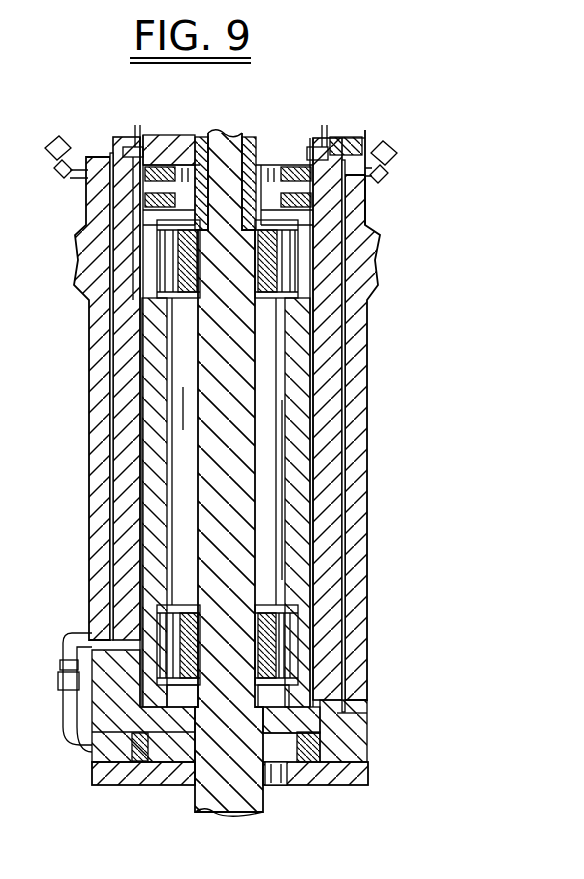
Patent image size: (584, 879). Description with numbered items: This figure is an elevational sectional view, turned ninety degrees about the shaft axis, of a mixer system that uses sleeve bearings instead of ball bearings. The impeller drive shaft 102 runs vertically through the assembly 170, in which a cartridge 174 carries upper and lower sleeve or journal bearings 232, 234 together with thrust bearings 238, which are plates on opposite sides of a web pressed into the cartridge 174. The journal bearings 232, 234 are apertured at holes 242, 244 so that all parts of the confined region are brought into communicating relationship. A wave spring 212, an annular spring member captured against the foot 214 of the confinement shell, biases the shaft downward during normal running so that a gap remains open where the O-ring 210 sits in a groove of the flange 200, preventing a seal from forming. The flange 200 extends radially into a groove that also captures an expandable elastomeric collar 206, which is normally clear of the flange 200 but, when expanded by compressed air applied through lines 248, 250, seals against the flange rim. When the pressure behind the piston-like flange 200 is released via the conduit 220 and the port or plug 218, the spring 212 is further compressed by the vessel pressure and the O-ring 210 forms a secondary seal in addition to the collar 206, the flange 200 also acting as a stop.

The shaft 102 is at (238, 413).
The assembly 170 is at (350, 328).
The cartridge 174 is at (295, 500).
The flange 200 is at (166, 785).
The expandable elastomeric collar 206 is at (353, 739).
The O-ring seal member 210 is at (288, 787).
The wave spring 212 is at (138, 150).
The foot 214 is at (93, 145).
The port 218 is at (392, 154).
The conduit 220 is at (346, 449).
The upper sleeve bearing 232 is at (282, 262).
The lower sleeve bearing 234 is at (313, 648).
The thrust bearings 238 is at (283, 158).
The hole 242 is at (160, 268).
The hole 244 is at (177, 637).
The line 248 is at (72, 733).
The line 250 is at (108, 397).